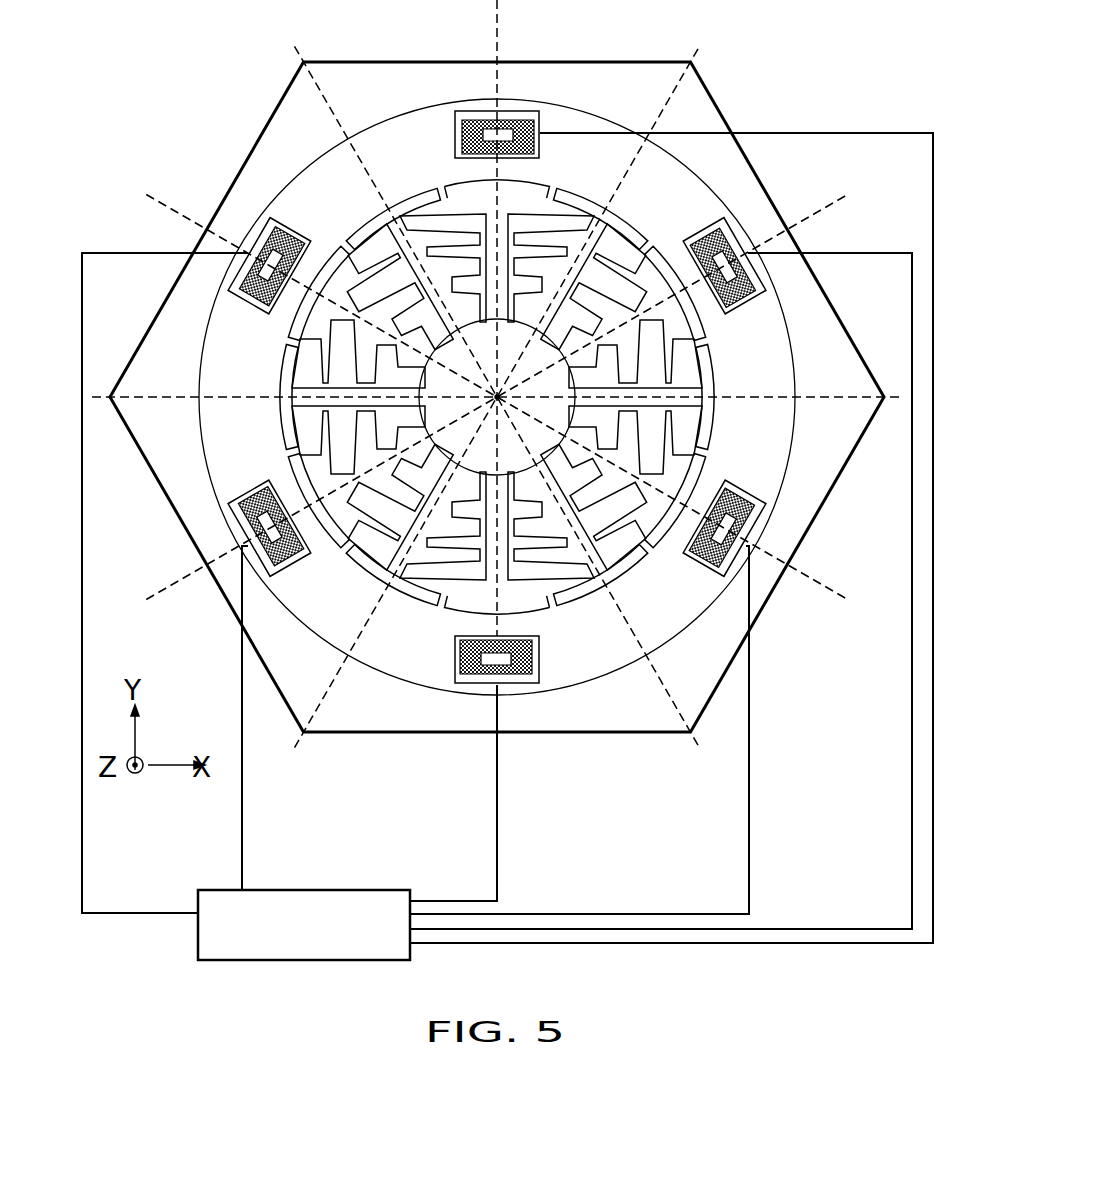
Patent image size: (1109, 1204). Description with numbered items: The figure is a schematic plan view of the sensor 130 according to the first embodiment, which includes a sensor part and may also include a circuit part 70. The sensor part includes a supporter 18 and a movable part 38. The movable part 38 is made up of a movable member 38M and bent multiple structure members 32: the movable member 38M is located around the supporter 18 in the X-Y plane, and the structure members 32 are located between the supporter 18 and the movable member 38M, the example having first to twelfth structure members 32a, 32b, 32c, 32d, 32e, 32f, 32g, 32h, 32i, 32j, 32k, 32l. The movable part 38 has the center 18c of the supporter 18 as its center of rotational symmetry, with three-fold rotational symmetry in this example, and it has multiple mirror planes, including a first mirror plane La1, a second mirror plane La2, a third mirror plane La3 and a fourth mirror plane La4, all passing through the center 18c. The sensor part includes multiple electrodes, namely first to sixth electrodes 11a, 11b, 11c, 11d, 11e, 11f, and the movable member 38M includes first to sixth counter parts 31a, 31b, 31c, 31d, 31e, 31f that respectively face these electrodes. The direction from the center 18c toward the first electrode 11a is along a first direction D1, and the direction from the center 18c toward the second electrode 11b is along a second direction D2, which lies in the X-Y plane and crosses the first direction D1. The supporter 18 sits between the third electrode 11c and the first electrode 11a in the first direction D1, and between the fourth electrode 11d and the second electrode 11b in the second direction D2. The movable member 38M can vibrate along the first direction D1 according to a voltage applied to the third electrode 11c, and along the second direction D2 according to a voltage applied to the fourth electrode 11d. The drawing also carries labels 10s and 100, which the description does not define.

The side surface of base 10s is at (340, 61).
The structure members 32 is at (489, 363).
The first counter part 31a is at (452, 163).
The second counter part 31b is at (684, 250).
The third counter part 31c is at (470, 683).
The fourth counter part 31d is at (250, 502).
The fifth counter part 31e is at (697, 575).
The sixth counter part 31f is at (308, 245).
The first electrode 11a is at (523, 116).
The second electrode 11b is at (727, 240).
The third electrode 11c is at (520, 682).
The fourth electrode 11d is at (250, 540).
The fifth electrode 11e is at (750, 522).
The sixth electrode 11f is at (250, 282).
The movable member 38M is at (546, 120).
The movable part 38 is at (613, 100).
The actuator device 100 is at (793, 42).
The sensor 130 is at (906, 56).
The first structure member 32a is at (446, 190).
The second structure member 32b is at (552, 190).
The third structure member 32c is at (640, 240).
The fourth structure member 32d is at (700, 352).
The fifth structure member 32e is at (702, 440).
The sixth structure member 32f is at (640, 560).
The seventh structure member 32g is at (551, 603).
The eighth structure member 32h is at (445, 603).
The ninth structure member 32i is at (358, 562).
The tenth structure member 32j is at (290, 441).
The eleventh structure member 32k is at (290, 350).
The twelfth structure member 32l is at (365, 235).
The supporter 18 is at (485, 440).
The center 18c is at (468, 450).
The circuit part 70 is at (198, 910).
The first mirror plane La1 is at (697, 743).
The second mirror plane La2 is at (810, 580).
The third mirror plane La3 is at (855, 393).
The fourth mirror plane La4 is at (818, 212).
The first direction D1 is at (775, 845).
The second direction D2 is at (775, 845).